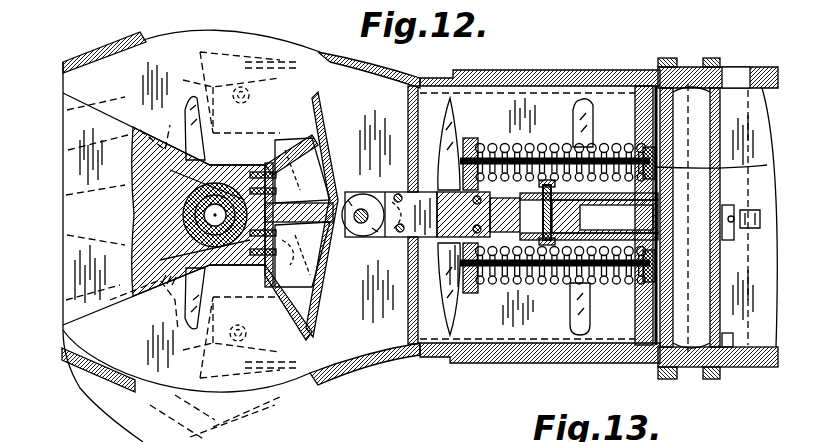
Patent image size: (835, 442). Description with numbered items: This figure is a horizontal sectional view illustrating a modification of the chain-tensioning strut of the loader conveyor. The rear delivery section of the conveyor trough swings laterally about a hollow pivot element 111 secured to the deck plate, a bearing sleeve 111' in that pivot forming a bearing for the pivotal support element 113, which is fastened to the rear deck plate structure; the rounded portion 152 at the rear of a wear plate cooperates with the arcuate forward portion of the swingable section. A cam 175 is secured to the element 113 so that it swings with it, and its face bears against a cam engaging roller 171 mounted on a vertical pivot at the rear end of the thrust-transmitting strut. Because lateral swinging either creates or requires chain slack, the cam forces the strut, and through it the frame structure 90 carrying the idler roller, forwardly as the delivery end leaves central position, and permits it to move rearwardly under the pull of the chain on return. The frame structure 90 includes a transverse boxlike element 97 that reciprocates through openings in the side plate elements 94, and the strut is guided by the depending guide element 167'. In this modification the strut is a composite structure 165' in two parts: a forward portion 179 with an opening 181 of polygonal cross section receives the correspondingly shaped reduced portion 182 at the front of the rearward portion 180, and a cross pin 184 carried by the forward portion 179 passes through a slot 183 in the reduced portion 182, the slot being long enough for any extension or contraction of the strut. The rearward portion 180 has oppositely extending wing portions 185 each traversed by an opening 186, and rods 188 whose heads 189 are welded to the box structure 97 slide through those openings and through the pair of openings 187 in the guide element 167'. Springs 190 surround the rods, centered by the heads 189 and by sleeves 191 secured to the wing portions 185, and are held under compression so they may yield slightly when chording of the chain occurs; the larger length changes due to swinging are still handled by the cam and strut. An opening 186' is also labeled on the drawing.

The frame structure 90 is at (697, 62).
The side plate element 94 is at (400, 74).
The transverse boxlike element 97 is at (715, 340).
The hollow pivot element 111 is at (231, 215).
The bearing sleeve 111' is at (144, 227).
The pivotal support element 113 is at (117, 123).
The rounded portion 152 is at (233, 40).
The composite strut structure 165' is at (442, 266).
The guide element 167' is at (675, 187).
The cam engaging roller 171 is at (353, 200).
The cam 175 is at (313, 137).
The forward portion 179 is at (627, 233).
The rearward portion 180 is at (407, 238).
The opening 181 is at (588, 292).
The reduced portion 182 is at (472, 280).
The slot 183 is at (557, 150).
The cross pin 184 is at (583, 218).
The wing portion 185 is at (442, 180).
The opening 186 is at (460, 244).
The spring retainer block 186' is at (428, 427).
The opening 187 is at (643, 148).
The rod 188 is at (592, 140).
The head 189 is at (760, 166).
The spring 190 is at (599, 192).
The sleeve 191 is at (493, 143).